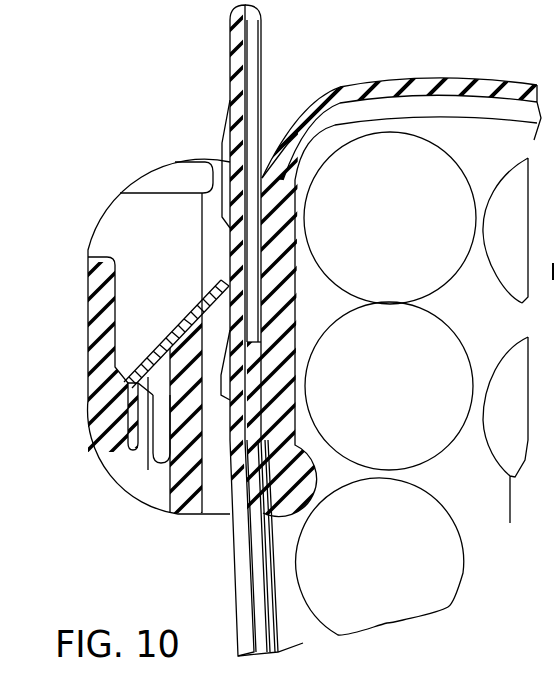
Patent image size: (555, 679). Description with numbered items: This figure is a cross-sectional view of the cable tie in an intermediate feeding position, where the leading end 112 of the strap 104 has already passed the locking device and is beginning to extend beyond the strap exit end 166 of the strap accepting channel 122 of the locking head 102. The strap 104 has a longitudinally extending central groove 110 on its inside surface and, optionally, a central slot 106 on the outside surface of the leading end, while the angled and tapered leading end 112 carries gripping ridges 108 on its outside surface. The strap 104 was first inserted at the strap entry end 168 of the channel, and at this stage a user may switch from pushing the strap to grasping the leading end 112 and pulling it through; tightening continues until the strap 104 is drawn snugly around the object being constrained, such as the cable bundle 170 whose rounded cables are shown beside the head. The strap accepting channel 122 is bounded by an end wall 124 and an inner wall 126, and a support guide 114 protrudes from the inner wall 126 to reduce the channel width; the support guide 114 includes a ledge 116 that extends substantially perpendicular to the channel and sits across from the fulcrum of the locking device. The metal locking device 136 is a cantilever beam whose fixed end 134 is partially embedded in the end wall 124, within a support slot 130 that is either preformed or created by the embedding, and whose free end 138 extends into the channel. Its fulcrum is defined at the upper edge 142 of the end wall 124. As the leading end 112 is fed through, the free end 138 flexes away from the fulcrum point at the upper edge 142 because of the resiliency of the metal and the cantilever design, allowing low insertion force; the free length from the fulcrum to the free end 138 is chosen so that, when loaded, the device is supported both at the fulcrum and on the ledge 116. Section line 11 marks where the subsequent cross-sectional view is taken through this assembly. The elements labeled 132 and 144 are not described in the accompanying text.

The section line 11 is at (43, 283).
The locking head 102 is at (107, 208).
The strap 104 is at (443, 78).
The central slot 106 is at (188, 265).
The gripping ridges 108 is at (225, 135).
The central groove 110 is at (247, 462).
The leading end 112 is at (230, 78).
The support guide 114 is at (235, 385).
The ledge 116 is at (222, 337).
The strap accepting channel 122 is at (213, 230).
The end wall 124 is at (97, 352).
The inner wall 126 is at (283, 245).
The support slot 130 is at (140, 463).
The spring 132 is at (150, 500).
The fixed end 134 is at (122, 417).
The metal locking device 136 is at (175, 288).
The free end 138 is at (187, 317).
The upper edge 142 is at (212, 348).
The insert 144 is at (168, 513).
The strap exit end 166 is at (262, 128).
The strap entry end 168 is at (230, 515).
The cable bundle 170 is at (408, 185).